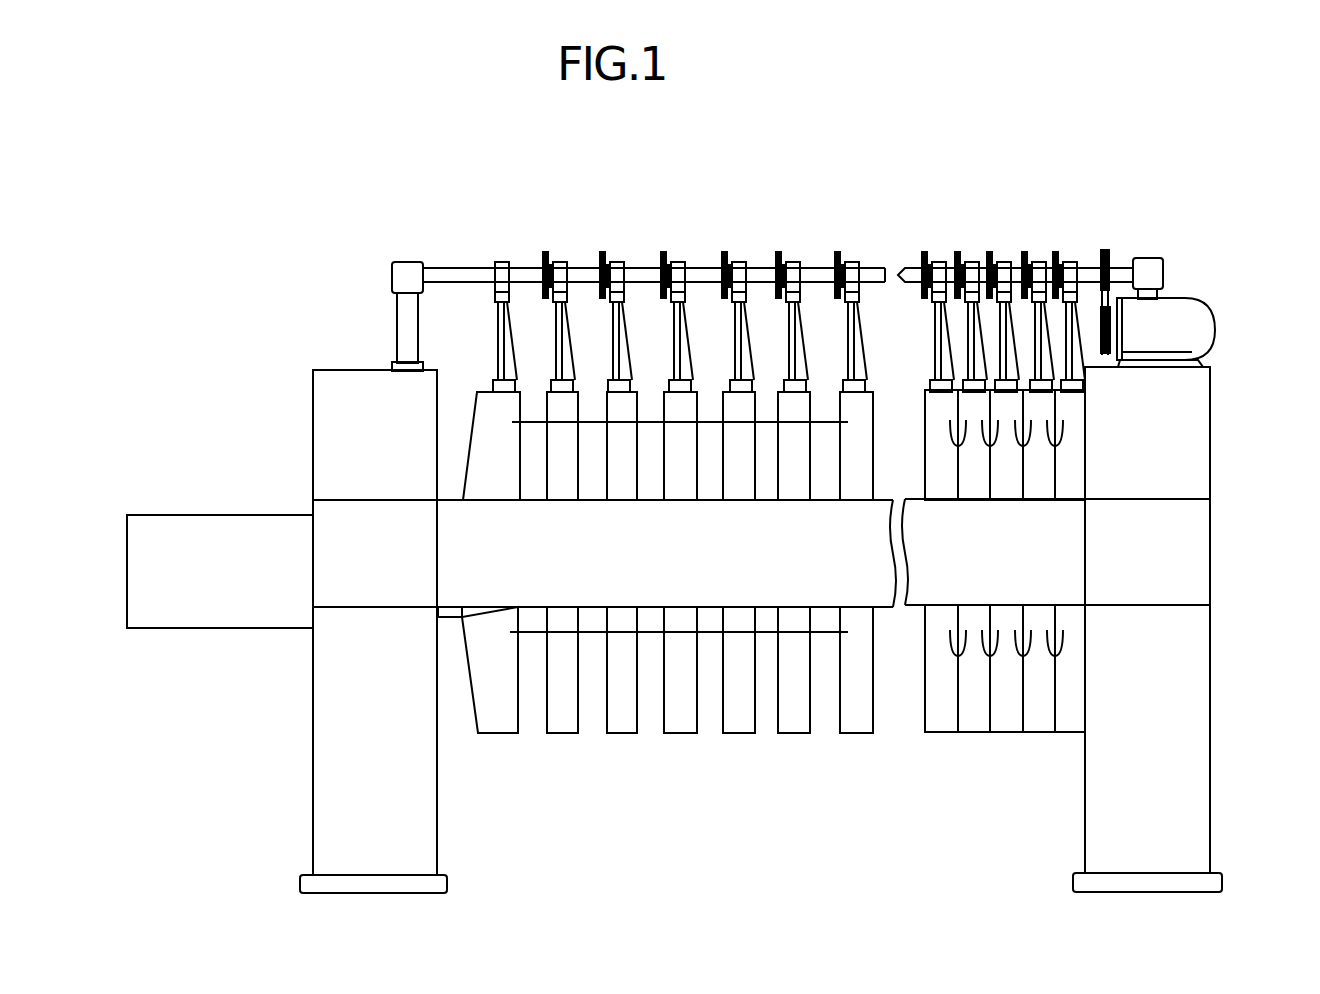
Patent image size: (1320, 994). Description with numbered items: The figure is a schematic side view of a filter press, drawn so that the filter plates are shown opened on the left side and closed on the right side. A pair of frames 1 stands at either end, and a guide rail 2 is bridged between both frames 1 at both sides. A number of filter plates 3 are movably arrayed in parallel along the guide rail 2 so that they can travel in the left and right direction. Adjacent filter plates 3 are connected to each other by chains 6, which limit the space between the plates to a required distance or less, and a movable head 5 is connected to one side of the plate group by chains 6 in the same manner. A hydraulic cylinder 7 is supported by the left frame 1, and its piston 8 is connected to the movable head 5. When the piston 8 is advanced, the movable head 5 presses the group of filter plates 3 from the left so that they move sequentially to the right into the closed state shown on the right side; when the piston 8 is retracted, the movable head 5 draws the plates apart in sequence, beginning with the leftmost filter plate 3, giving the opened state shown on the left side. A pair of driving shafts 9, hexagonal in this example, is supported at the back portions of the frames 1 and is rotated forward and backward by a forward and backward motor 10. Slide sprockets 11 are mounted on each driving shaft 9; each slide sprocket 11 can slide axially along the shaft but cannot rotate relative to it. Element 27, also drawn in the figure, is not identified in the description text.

The frame 1 is at (326, 750).
The guide rail 2 is at (1193, 545).
The filter plate 3 is at (740, 722).
The movable head 5 is at (505, 723).
The chain 6 is at (536, 422).
The hydraulic cylinder 7 is at (207, 533).
The piston 8 is at (452, 617).
The driving shaft 9 is at (1088, 262).
The forward and backward motor 10 is at (1185, 310).
The slide sprocket 11 is at (545, 252).
The hanger arm 27 is at (740, 335).